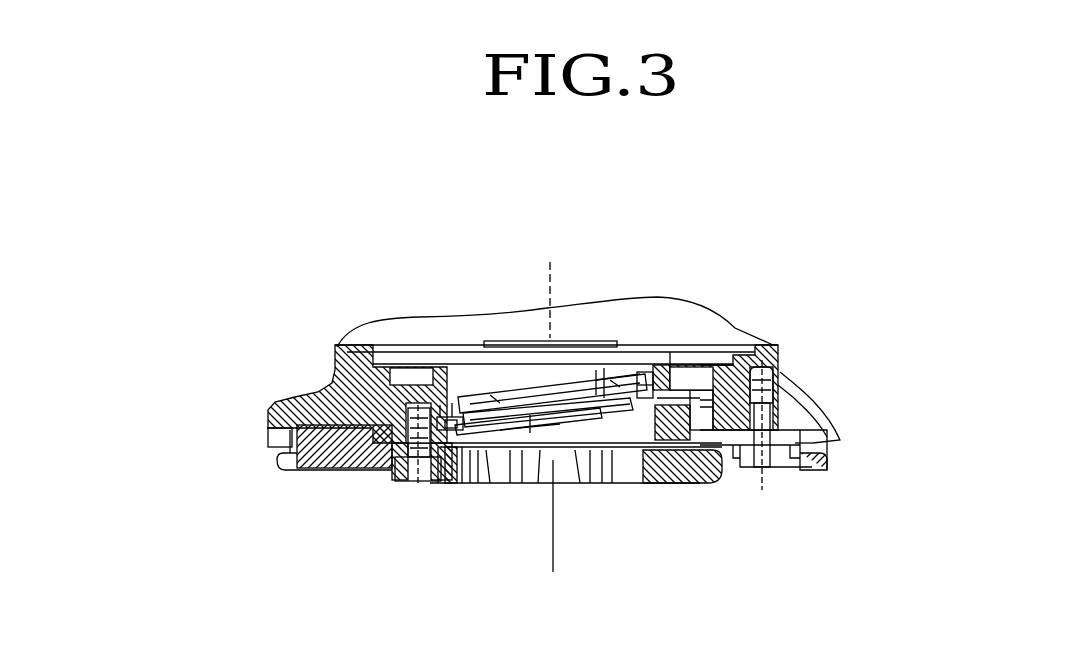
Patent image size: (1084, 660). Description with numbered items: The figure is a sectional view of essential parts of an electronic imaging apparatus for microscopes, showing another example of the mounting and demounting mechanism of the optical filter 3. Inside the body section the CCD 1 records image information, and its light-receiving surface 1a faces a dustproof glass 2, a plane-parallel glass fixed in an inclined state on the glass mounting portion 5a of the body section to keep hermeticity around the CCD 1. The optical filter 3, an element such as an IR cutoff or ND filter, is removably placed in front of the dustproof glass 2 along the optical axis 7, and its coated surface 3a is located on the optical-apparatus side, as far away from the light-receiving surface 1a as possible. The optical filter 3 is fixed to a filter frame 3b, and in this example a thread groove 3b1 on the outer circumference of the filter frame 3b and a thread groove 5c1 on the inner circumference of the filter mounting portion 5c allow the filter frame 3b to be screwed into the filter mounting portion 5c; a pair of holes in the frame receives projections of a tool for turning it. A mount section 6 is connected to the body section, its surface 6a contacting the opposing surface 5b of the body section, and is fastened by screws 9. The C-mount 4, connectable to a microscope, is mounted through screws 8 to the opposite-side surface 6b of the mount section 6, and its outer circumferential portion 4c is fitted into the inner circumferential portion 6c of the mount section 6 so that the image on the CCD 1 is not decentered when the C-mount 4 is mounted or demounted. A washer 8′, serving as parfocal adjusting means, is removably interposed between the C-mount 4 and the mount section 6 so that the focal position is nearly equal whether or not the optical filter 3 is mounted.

The CCD 1 is at (518, 343).
The light-receiving surface 1a is at (577, 343).
The dustproof glass 2 is at (487, 483).
The optical filter 3 is at (593, 480).
The coated surface 3a is at (530, 483).
The filter frame 3b is at (473, 483).
The thread groove 3b1 is at (612, 385).
The C-mount 4 is at (660, 484).
The outer circumferential portion 4c is at (707, 478).
The glass mounting portion 5a is at (455, 396).
The surface 5b is at (690, 388).
The filter mounting portion 5c is at (657, 388).
The thread groove 5c1 is at (643, 390).
The mount section 6 is at (297, 472).
The surface 6a is at (737, 473).
The opposite-side surface 6b is at (372, 467).
The inner circumferential portion 6c is at (720, 473).
The optical axis 7 is at (558, 500).
The screw 8 is at (393, 477).
The washer 8′ is at (685, 483).
The screw 9 is at (800, 473).